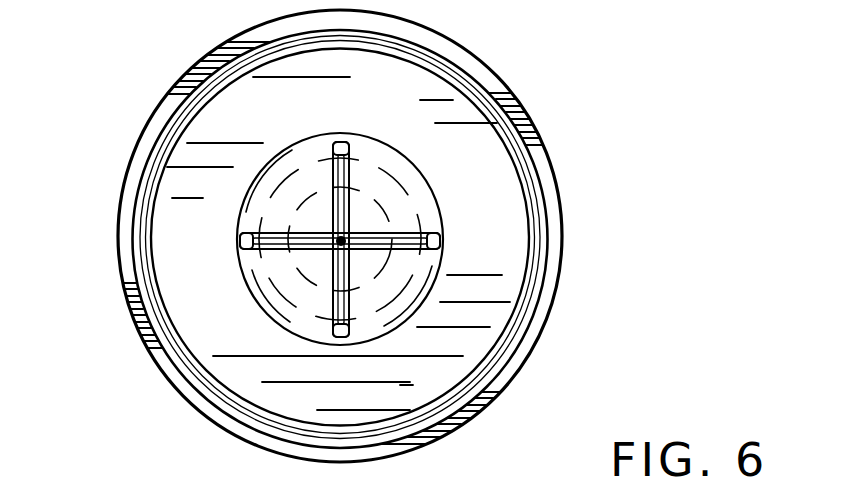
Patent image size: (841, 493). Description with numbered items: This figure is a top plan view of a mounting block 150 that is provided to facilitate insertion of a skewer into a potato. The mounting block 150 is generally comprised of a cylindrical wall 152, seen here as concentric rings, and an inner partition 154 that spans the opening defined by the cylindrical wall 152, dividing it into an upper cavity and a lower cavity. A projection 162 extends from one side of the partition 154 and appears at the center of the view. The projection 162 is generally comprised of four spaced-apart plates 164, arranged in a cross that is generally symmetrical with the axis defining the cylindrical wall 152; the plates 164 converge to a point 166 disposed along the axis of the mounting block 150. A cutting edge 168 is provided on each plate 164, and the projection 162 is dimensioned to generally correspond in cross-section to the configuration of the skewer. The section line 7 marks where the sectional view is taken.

The mounting block 150 is at (152, 84).
The cylindrical wall 152 is at (500, 358).
The inner partition 154 is at (470, 335).
The projection 162 is at (384, 184).
The plates 164 is at (418, 248).
The point 166 is at (333, 243).
The cutting edge 168 is at (426, 243).
The section line 7- 7 is at (112, 233).